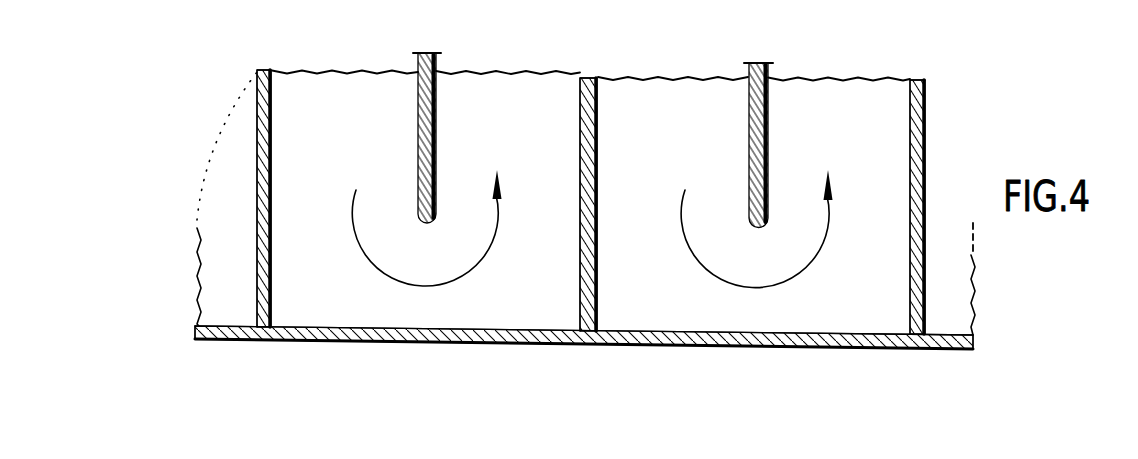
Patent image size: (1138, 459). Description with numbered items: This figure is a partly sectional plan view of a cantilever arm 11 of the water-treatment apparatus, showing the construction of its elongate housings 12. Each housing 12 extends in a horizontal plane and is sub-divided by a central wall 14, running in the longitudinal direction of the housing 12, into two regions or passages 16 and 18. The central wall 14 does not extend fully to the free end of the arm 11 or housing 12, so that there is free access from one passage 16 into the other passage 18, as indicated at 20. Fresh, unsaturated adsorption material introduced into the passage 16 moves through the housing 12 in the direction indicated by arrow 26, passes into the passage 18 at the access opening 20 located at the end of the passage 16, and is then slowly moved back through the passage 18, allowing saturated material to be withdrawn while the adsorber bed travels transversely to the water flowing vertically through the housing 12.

The cantilever arm 11 is at (186, 227).
The housing 12 is at (256, 298).
The central wall 14 is at (436, 81).
The passage 16 is at (307, 115).
The passage 18 is at (531, 117).
The access opening 20 is at (425, 293).
The arrow 26 is at (378, 270).